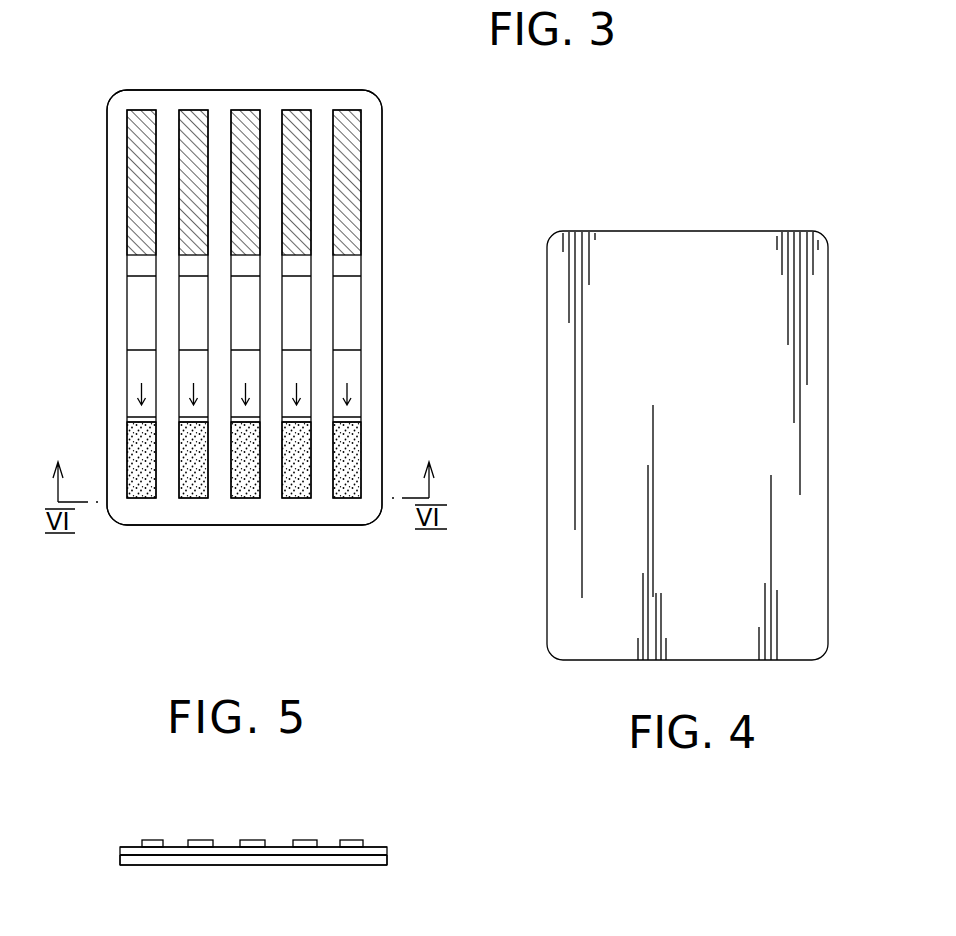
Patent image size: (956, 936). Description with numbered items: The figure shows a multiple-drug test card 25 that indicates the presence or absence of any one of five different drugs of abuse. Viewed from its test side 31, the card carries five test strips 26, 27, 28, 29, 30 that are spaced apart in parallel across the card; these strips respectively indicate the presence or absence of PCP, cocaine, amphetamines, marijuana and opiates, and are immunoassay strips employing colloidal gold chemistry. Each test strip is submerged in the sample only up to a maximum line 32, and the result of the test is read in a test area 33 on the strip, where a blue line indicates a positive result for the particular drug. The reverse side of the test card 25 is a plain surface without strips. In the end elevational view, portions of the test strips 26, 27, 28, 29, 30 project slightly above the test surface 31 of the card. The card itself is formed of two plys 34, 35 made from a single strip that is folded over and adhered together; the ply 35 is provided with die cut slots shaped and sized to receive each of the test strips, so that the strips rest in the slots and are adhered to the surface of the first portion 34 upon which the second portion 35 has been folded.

In FIG. 3, the test card 25 is at (113, 92).
In FIG. 4, the test card 25 is at (814, 232).
In FIG. 3, the test strip 26 is at (143, 109).
In FIG. 5, the test strip 26 is at (152, 840).
In FIG. 3, the test strip 27 is at (195, 109).
In FIG. 5, the test strip 27 is at (203, 840).
In FIG. 3, the test strip 28 is at (243, 109).
In FIG. 5, the test strip 28 is at (258, 840).
In FIG. 3, the test strip 29 is at (298, 109).
In FIG. 5, the test strip 29 is at (308, 840).
In FIG. 3, the test strip 30 is at (358, 108).
In FIG. 5, the test strip 30 is at (355, 840).
In FIG. 3, the test side 31 is at (116, 150).
In FIG. 5, the test side 31 is at (130, 847).
In FIG. 3, the maximum line 32 is at (127, 418).
In FIG. 3, the test area 33 is at (95, 277).
In FIG. 5, the ply 34 is at (126, 866).
In FIG. 5, the ply 35 is at (120, 851).